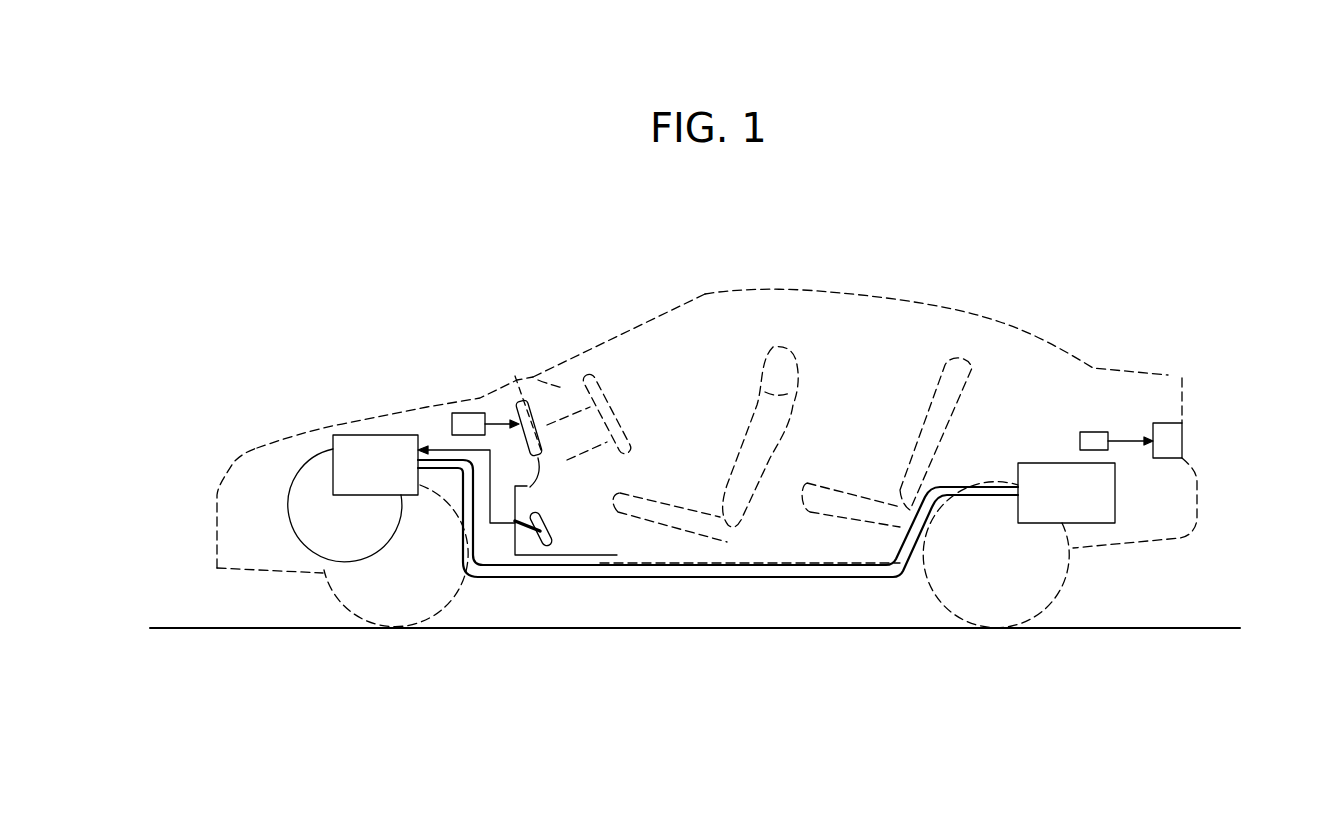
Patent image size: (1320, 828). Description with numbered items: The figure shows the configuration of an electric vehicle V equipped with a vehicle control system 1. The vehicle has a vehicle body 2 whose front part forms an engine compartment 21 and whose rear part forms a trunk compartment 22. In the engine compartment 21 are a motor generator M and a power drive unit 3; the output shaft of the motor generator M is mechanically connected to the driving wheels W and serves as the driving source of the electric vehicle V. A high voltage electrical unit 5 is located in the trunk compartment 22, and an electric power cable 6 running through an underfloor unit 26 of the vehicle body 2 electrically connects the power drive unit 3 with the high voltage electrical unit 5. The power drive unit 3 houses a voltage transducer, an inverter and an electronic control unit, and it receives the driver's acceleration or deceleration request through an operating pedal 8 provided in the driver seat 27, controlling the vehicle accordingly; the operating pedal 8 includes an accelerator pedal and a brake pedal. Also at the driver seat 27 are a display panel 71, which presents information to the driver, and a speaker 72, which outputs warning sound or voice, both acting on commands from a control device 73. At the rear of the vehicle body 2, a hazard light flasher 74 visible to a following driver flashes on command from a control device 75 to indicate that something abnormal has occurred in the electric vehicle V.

The electric vehicle V is at (320, 264).
The vehicle control system 1 is at (310, 418).
The engine compartment 21 is at (403, 418).
The driver seat 27 is at (640, 333).
The vehicle body 2 is at (735, 292).
The trunk compartment 22 is at (1132, 372).
The driving wheels W is at (342, 603).
The motor generator M is at (297, 512).
The power drive unit 3 is at (355, 458).
The underfloor unit 26 is at (688, 590).
The electric power cable 6 is at (800, 562).
The high voltage electrical unit 5 is at (1048, 466).
The control device 75 is at (1092, 432).
The hazard light flasher 74 is at (1173, 442).
The control device 73 is at (468, 413).
The display panel 71 is at (524, 400).
The speaker 72 is at (546, 468).
The operating pedal 8 is at (542, 530).